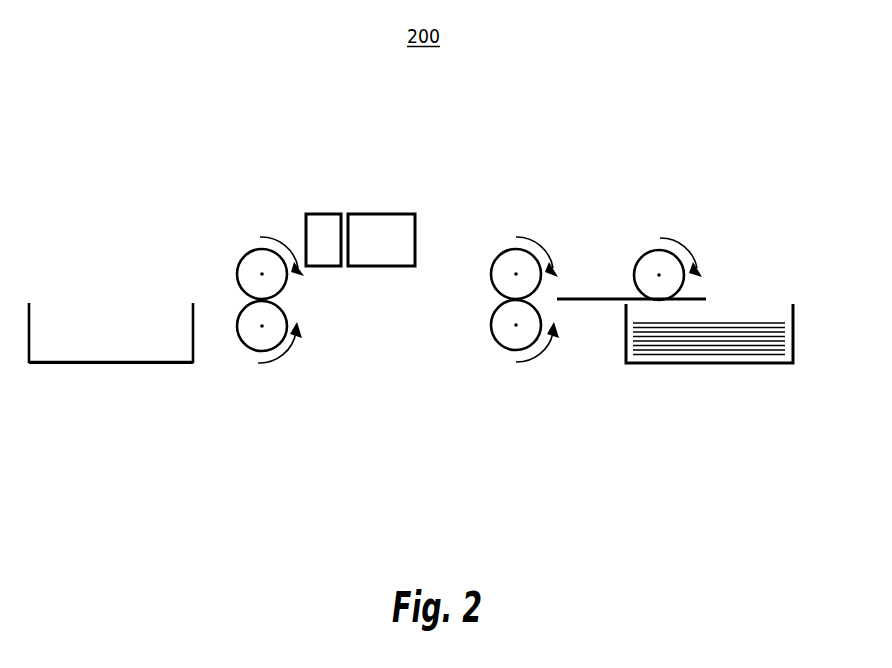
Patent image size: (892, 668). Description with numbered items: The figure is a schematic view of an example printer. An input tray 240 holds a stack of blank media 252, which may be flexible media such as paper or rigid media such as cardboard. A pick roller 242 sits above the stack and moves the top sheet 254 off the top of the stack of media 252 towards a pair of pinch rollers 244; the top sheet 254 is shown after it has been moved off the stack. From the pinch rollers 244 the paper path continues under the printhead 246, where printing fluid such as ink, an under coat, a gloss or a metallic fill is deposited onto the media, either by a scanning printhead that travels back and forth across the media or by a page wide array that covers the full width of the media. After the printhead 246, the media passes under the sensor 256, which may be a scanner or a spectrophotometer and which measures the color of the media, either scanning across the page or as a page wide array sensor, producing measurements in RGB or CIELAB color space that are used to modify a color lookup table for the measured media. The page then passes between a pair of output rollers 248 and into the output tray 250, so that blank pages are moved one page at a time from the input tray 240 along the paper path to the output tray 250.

The input tray 240 is at (688, 364).
The pick roller 242 is at (642, 253).
The pair of pinch rollers 244 is at (490, 337).
The printhead 246 is at (395, 212).
The pair of output rollers 248 is at (245, 347).
The output tray 250 is at (93, 364).
The stack of blank media 252 is at (797, 320).
The top sheet 254 is at (700, 297).
The sensor 256 is at (320, 212).